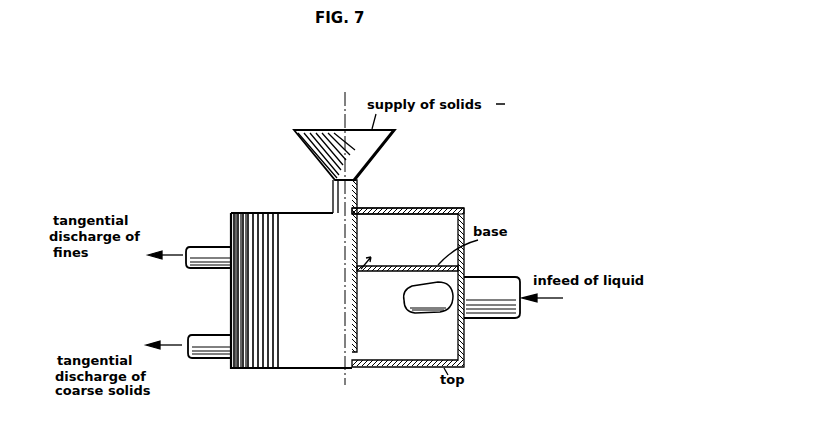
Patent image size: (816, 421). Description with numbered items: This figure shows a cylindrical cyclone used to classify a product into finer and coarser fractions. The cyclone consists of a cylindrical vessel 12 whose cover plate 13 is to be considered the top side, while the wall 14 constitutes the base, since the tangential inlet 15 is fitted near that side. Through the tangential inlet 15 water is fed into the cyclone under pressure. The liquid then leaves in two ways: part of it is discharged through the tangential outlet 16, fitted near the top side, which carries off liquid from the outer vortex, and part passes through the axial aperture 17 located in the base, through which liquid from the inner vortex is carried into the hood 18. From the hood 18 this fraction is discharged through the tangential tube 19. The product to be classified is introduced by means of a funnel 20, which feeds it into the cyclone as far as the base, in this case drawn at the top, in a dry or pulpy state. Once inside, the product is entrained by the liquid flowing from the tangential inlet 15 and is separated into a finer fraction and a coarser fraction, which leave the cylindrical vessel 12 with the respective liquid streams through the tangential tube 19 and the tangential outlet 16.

The cylindrical vessel 12 is at (229, 310).
The cover plate 13 is at (408, 283).
The wall 14 is at (405, 270).
The tangential inlet 15 is at (487, 277).
The tangential outlet 16 is at (217, 358).
The axial aperture 17 is at (366, 276).
The hood 18 is at (398, 211).
The tangential tube 19 is at (211, 246).
The funnel 20 is at (376, 147).